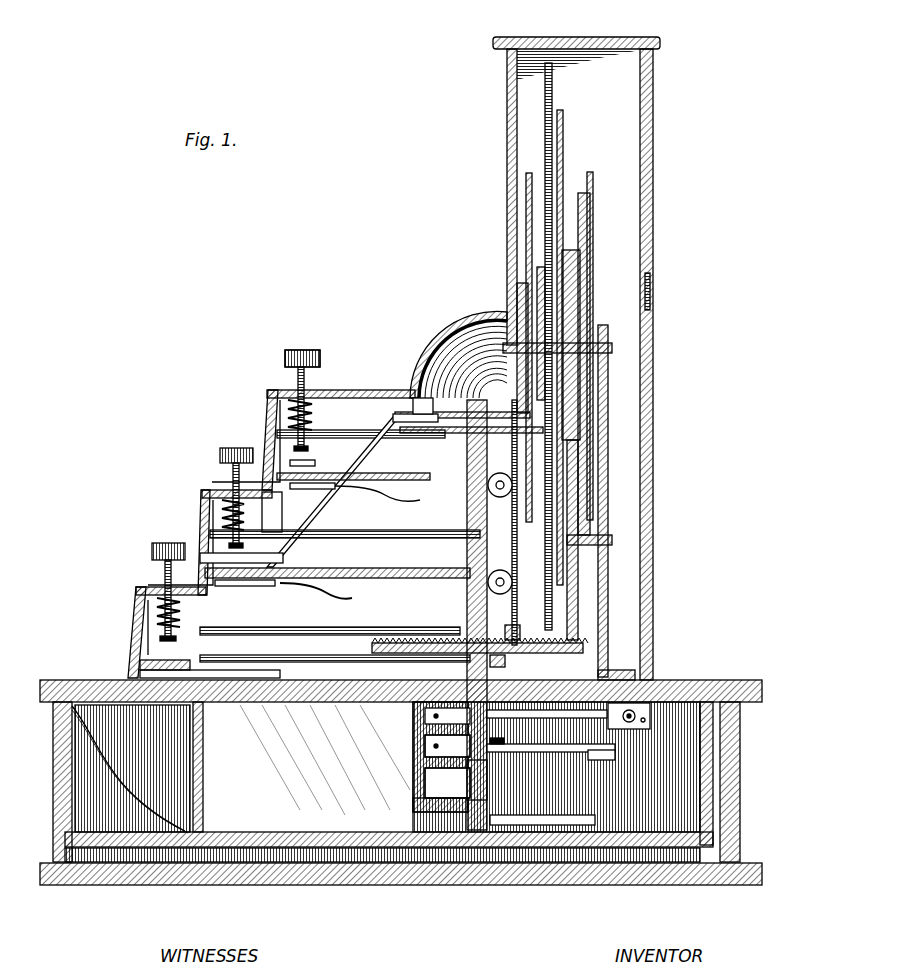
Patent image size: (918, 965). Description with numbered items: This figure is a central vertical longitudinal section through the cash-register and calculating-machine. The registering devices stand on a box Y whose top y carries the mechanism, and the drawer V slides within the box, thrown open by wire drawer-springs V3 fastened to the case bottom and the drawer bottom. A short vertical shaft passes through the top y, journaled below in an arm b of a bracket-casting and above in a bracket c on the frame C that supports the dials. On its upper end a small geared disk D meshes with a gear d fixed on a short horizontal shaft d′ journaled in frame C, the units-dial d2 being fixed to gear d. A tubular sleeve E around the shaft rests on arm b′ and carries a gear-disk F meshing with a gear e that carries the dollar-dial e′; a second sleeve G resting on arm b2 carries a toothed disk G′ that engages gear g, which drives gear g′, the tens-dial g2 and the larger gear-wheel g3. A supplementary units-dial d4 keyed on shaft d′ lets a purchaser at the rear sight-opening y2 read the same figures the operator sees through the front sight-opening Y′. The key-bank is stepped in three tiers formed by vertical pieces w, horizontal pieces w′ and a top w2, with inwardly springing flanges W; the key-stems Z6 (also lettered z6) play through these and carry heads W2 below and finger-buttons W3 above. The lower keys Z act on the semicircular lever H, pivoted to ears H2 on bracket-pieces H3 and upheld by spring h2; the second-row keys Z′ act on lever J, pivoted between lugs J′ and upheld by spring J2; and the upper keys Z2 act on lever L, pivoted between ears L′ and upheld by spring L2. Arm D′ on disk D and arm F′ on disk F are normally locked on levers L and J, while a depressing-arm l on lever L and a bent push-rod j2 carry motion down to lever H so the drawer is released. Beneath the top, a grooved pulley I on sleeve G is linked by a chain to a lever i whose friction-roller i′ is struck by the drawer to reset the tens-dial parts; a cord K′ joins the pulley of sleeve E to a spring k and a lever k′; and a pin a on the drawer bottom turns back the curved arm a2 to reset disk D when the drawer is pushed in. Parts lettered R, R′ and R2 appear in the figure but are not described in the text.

The top y is at (710, 686).
The stand or box Y is at (407, 782).
The drawer springs V3 is at (552, 890).
The drawer V is at (326, 830).
The pin a is at (556, 767).
The grooved pulley I is at (425, 715).
The bracket arm b2 is at (425, 745).
The bracket arm b′ is at (447, 783).
The bracket arm b is at (425, 790).
The vertical column R is at (467, 550).
The column lower portion R′ is at (490, 782).
The column foot bar R2 is at (532, 815).
The friction-roller i′ is at (547, 723).
The lever i is at (600, 714).
The cord or chain K′ is at (551, 752).
The spring k is at (506, 740).
The lever k′ is at (600, 760).
The spring h2 is at (252, 678).
The semicircular lever H is at (140, 664).
The sight-opening Y′ is at (507, 242).
The dollar-dial e′ is at (553, 86).
The tens-dial g2 is at (564, 116).
The units-dial d2 is at (526, 192).
The supplementary units-dial d4 is at (594, 177).
The gear-wheel g3 is at (591, 200).
The gear g′ is at (581, 272).
The gear g is at (578, 580).
The gear d is at (517, 300).
The sight-opening y2 is at (652, 290).
The frame C is at (608, 366).
The bracket-pieces H3 is at (517, 540).
The ears H2 is at (518, 625).
The ears L′ is at (500, 474).
The lugs J′ is at (508, 582).
The second tubular shaft G is at (480, 659).
The toothed disk G′ is at (507, 660).
The geared disk D is at (430, 372).
The horizontal shaft d′ is at (470, 330).
The gear e is at (466, 362).
The bracket c is at (481, 378).
The key-bank top w2 is at (352, 392).
The vertical pieces w is at (266, 432).
The horizontal pieces w′ is at (214, 490).
The flanges W is at (126, 606).
The key-stem heads W2 is at (316, 455).
The upper-row keys Z2 is at (284, 357).
The finger-buttons W3 is at (321, 356).
The key stem z6 is at (267, 449).
The second-row keys Z′ is at (226, 448).
The lower-row keys Z is at (167, 543).
The key stems Z6 is at (165, 576).
The gear-disk F is at (430, 434).
The arm D′ is at (352, 482).
The lever L is at (353, 466).
The spring L2 is at (315, 490).
The depressing-arm l is at (268, 512).
The tubular shaft E is at (467, 516).
The arm F′ is at (288, 556).
The semicircular lever J is at (350, 574).
The push-rod j2 is at (240, 588).
The spring J2 is at (298, 592).
The horizontal arm a2 is at (322, 658).